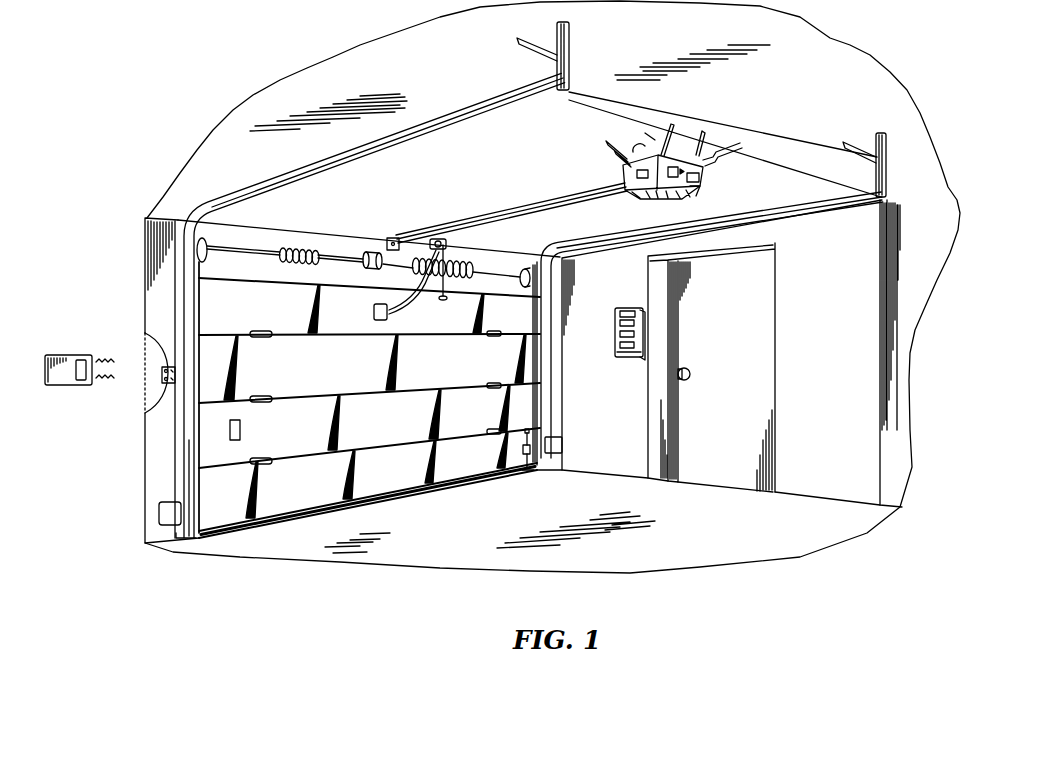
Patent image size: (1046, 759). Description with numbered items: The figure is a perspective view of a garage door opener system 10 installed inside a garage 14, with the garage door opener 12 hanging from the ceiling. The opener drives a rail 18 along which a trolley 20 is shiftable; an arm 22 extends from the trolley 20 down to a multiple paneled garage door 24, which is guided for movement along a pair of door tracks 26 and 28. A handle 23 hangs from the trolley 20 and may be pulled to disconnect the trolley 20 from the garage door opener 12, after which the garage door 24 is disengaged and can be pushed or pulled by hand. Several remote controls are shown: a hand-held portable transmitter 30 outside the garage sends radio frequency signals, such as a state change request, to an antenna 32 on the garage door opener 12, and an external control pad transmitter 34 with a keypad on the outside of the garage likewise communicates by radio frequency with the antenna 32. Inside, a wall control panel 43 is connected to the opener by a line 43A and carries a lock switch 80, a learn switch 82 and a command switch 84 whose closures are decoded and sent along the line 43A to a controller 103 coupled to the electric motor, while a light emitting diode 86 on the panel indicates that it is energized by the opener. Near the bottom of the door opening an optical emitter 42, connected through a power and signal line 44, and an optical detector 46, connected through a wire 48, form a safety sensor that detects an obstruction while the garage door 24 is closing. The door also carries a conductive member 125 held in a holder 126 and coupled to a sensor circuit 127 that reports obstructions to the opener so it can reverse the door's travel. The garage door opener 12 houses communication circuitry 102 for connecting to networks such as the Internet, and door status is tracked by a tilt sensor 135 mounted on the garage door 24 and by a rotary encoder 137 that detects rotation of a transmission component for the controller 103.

The garage door opener system 10 is at (513, 204).
The garage door opener 12 is at (703, 180).
The garage 14 is at (158, 287).
The rail 18 is at (443, 238).
The trolley 20 is at (450, 245).
The arm 22 is at (387, 312).
The handle 23 is at (447, 300).
The garage door 24 is at (321, 400).
The door track 26 is at (185, 460).
The door track 28 is at (540, 283).
The portable transmitter 30 is at (60, 355).
The antenna 32 is at (700, 192).
The external control pad transmitter 34 is at (162, 368).
The optical emitter 42 is at (562, 438).
The wall control panel 43 is at (615, 337).
The line 43A is at (645, 305).
The power and signal line 44 is at (770, 163).
The optical detector 46 is at (160, 512).
The wire 48 is at (258, 188).
The lock switch 80 is at (650, 329).
The learn switch 82 is at (615, 353).
The command switch 84 is at (630, 358).
The light emitting diode 86 is at (617, 308).
The communication circuitry 102 is at (663, 114).
The controller 103 is at (677, 165).
The conductive member 125 is at (527, 470).
The holder 126 is at (532, 470).
The sensor circuit 127 is at (527, 450).
The tilt sensor 135 is at (230, 431).
The rotary encoder 137 is at (623, 168).